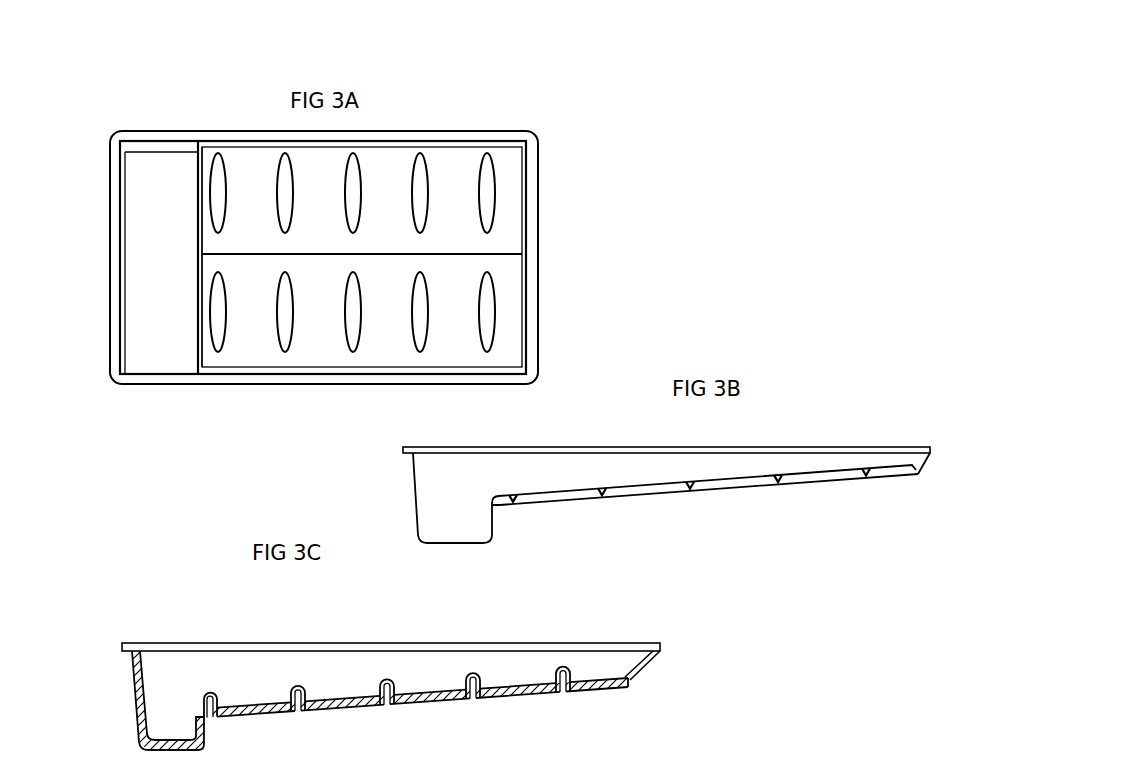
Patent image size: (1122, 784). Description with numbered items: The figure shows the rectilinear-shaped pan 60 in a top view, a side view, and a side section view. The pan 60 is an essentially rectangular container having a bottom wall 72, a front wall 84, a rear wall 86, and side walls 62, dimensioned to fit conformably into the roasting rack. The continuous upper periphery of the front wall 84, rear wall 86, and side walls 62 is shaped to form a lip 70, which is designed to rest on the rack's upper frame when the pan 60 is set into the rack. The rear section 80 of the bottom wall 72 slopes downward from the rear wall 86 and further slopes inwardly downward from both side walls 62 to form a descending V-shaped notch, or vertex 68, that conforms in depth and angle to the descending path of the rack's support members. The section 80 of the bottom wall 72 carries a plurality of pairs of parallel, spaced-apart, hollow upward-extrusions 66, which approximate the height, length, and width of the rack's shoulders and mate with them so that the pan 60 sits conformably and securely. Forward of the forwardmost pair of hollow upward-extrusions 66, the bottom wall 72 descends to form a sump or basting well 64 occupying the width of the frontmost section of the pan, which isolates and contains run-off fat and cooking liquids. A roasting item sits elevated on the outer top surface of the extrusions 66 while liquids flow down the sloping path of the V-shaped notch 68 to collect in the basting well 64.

In FIG. 3A, the pan 60 is at (201, 121).
In FIG. 3B, the pan 60 is at (587, 440).
In FIG. 3C, the pan 60 is at (285, 637).
In FIG. 3A, the side walls 62 is at (332, 147).
In FIG. 3B, the side walls 62 is at (608, 462).
In FIG. 3C, the side walls 62 is at (518, 668).
In FIG. 3A, the basting well 64 is at (140, 304).
In FIG. 3B, the basting well 64 is at (443, 518).
In FIG. 3C, the basting well 64 is at (173, 707).
In FIG. 3A, the hollow upward-extrusions 66 is at (212, 202).
In FIG. 3B, the hollow upward-extrusions 66 is at (515, 503).
In FIG. 3C, the hollow upward-extrusions 66 is at (298, 714).
In FIG. 3A, the V-shaped notch 68 is at (422, 253).
In FIG. 3B, the V-shaped notch 68 is at (722, 485).
In FIG. 3A, the lip 70 is at (113, 136).
In FIG. 3B, the lip 70 is at (403, 449).
In FIG. 3C, the lip 70 is at (122, 648).
In FIG. 3A, the bottom wall 72 is at (501, 275).
In FIG. 3B, the bottom wall 72 is at (652, 494).
In FIG. 3C, the bottom wall 72 is at (364, 708).
In FIG. 3A, the rear section of bottom wall 80 is at (318, 363).
In FIG. 3B, the rear section of bottom wall 80 is at (805, 471).
In FIG. 3C, the rear section of bottom wall 80 is at (477, 680).
In FIG. 3A, the front wall 84 is at (126, 237).
In FIG. 3B, the front wall 84 is at (410, 467).
In FIG. 3C, the front wall 84 is at (135, 703).
In FIG. 3A, the rear wall 86 is at (523, 193).
In FIG. 3B, the rear wall 86 is at (924, 460).
In FIG. 3C, the rear wall 86 is at (642, 672).